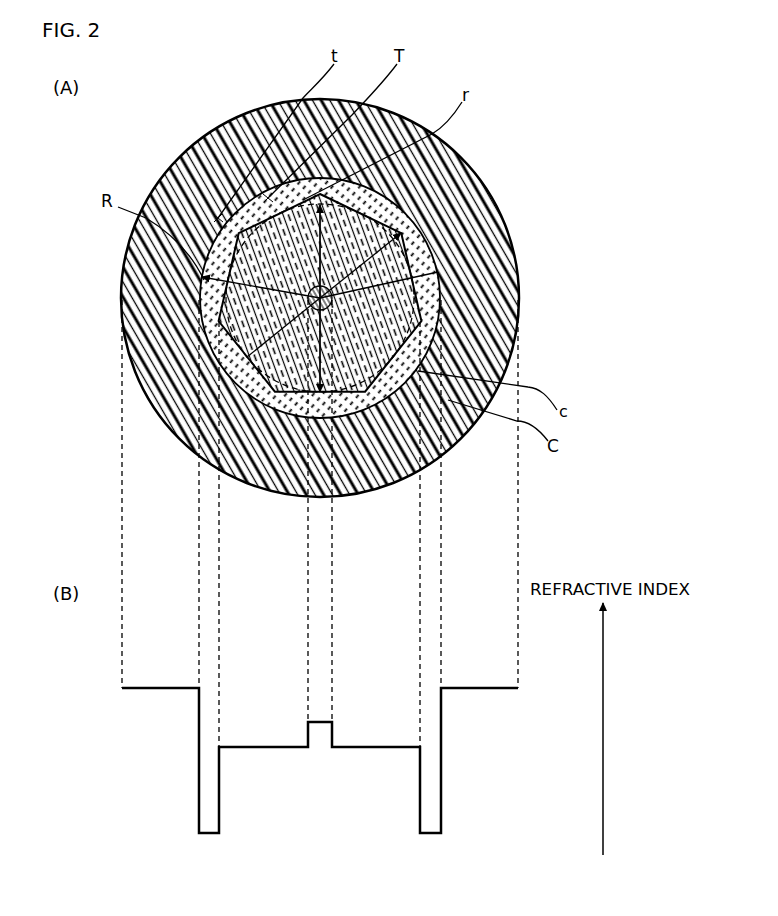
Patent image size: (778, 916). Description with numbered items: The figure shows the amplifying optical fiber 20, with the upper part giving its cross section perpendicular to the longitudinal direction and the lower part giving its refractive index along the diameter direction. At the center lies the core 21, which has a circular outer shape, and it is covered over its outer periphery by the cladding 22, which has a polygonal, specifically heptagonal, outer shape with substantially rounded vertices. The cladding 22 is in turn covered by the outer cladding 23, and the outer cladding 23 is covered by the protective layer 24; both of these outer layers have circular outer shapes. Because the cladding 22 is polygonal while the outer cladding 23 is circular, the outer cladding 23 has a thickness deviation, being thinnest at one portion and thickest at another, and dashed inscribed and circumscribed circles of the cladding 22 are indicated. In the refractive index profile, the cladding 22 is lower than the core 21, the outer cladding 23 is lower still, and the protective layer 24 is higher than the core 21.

The amplifying optical fiber 20 is at (494, 116).
The core 21 is at (437, 278).
The cladding 22 is at (350, 196).
The outer cladding 23 is at (340, 290).
The protective layer 24 is at (490, 298).